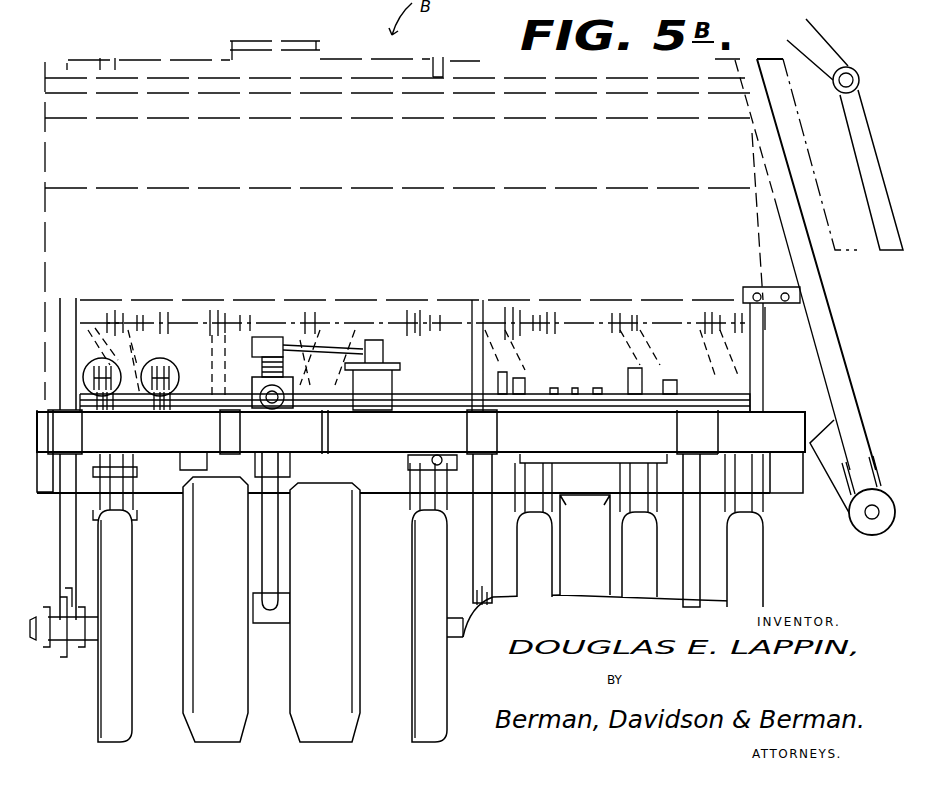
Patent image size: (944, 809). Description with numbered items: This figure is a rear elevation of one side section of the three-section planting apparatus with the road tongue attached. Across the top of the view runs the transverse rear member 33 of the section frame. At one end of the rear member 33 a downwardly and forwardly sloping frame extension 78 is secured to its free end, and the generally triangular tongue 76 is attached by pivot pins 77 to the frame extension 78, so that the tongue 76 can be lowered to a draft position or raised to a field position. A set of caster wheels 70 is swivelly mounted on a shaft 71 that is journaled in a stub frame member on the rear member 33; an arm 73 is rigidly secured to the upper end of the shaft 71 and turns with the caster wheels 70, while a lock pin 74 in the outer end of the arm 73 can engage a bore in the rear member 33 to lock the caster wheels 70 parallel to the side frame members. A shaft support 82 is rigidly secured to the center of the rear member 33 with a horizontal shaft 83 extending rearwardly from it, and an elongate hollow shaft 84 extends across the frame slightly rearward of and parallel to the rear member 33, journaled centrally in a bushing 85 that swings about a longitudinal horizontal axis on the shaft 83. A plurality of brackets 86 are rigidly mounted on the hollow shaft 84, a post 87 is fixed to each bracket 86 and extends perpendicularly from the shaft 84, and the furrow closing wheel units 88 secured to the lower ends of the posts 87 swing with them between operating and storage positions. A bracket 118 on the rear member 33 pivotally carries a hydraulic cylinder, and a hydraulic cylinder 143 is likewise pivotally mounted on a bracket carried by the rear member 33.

The transverse rear member 33 is at (782, 420).
The caster wheels 70 is at (349, 756).
The shaft 71 is at (278, 553).
The arm 73 is at (333, 342).
The lock pin 74 is at (374, 340).
The tongue 76 is at (825, 320).
The pivot pins 77 is at (870, 515).
The frame extension 78 is at (833, 470).
The shaft support 82 is at (282, 408).
The horizontal shaft 83 is at (270, 405).
The elongate hollow shaft 84 is at (353, 432).
The bushing 85 is at (234, 412).
The brackets 86 is at (82, 434).
The post 87 is at (58, 518).
The furrow closing wheel units 88 is at (130, 742).
The bracket 118 is at (93, 360).
The hydraulic cylinder 143 is at (163, 357).